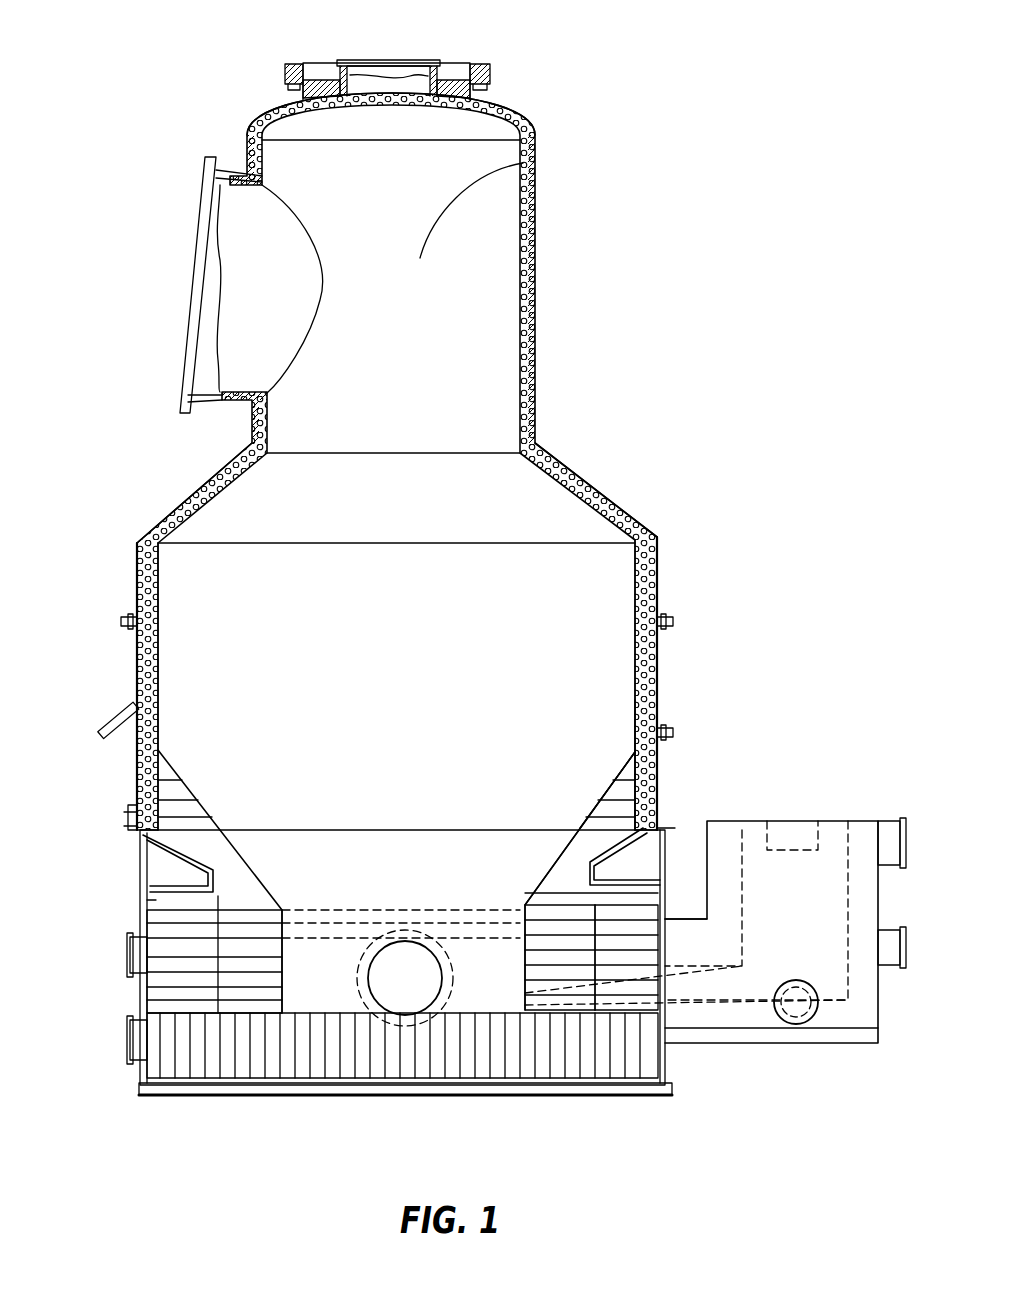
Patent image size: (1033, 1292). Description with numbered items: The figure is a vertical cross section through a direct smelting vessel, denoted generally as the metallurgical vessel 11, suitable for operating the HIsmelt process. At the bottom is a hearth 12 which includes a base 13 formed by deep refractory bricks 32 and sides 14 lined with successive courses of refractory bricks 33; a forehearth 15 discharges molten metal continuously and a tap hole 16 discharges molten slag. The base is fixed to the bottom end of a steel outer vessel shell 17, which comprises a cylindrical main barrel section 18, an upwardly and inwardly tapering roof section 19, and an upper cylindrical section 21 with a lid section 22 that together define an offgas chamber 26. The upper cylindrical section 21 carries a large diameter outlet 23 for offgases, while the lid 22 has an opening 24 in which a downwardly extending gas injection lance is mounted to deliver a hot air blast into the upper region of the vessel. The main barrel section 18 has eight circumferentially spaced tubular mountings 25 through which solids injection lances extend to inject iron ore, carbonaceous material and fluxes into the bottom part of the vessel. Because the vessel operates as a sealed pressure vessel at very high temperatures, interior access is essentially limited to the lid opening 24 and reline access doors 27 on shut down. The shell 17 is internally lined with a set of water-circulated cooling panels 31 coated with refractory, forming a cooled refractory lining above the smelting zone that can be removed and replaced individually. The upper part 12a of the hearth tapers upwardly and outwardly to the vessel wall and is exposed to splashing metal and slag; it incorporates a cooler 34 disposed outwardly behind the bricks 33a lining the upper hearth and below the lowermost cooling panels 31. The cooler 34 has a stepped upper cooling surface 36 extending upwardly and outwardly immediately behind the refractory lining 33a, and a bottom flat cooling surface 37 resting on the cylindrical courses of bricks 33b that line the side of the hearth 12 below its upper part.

The metallurgical vessel 11 is at (672, 345).
The hearth 12 is at (213, 1108).
The upper part of the hearth 12a is at (223, 817).
The base 13 is at (302, 1082).
The sides 14 is at (170, 948).
The forehearth 15 is at (783, 878).
The tap hole 16 is at (128, 812).
The outer vessel shell 17 is at (662, 575).
The cylindrical main barrel section 18 is at (657, 660).
The roof section 19 is at (598, 493).
The upper cylindrical section 21 is at (535, 232).
The lid section 22 is at (262, 97).
The outlet 23 is at (205, 268).
The opening 24 is at (398, 60).
The tubular mountings 25 is at (118, 712).
The offgas chamber 26 is at (523, 163).
The reline access doors 27 is at (403, 955).
The cooling panels 31 is at (655, 706).
The deep refractory bricks 32 is at (578, 1052).
The refractory bricks 33 is at (610, 973).
The bricks lining the upper part of the hearth 33a is at (595, 805).
The cylindrical courses of bricks 33b is at (540, 945).
The cooler 34 is at (678, 857).
The stepped upper cooling surface 36 is at (585, 865).
The bottom flat cooling surface 37 is at (630, 948).